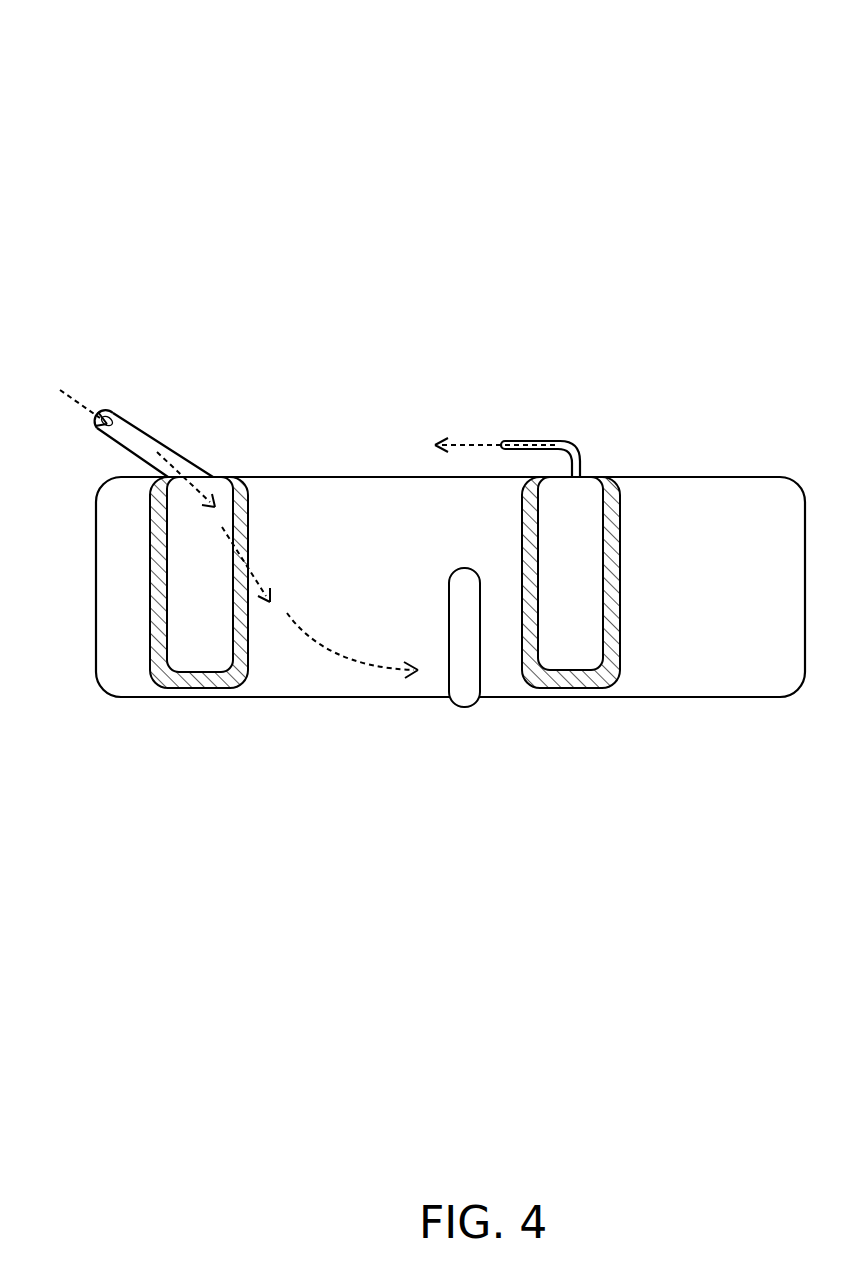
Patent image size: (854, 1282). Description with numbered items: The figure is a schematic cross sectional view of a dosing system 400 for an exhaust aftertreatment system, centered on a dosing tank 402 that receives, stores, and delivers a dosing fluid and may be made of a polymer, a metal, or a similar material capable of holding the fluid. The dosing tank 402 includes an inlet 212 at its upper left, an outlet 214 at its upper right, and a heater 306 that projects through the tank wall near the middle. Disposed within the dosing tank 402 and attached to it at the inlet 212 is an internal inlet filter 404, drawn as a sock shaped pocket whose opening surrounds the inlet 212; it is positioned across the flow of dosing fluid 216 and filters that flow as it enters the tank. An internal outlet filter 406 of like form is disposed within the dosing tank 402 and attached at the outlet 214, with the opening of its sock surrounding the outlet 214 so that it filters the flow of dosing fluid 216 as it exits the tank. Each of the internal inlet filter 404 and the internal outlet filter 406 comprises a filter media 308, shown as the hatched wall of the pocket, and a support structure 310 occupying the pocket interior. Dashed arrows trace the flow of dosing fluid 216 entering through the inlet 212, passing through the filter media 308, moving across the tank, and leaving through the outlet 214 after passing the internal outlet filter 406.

The dosing system 400 is at (138, 90).
The dosing tank 402 is at (470, 536).
The internal inlet filter 404 is at (274, 511).
The internal outlet filter 406 is at (644, 512).
The filter media 308 is at (243, 542).
The support structure 310 is at (219, 586).
The heater 306 is at (459, 708).
The inlet 212 is at (147, 443).
The outlet 214 is at (532, 441).
The flow of dosing fluid 216 is at (345, 652).